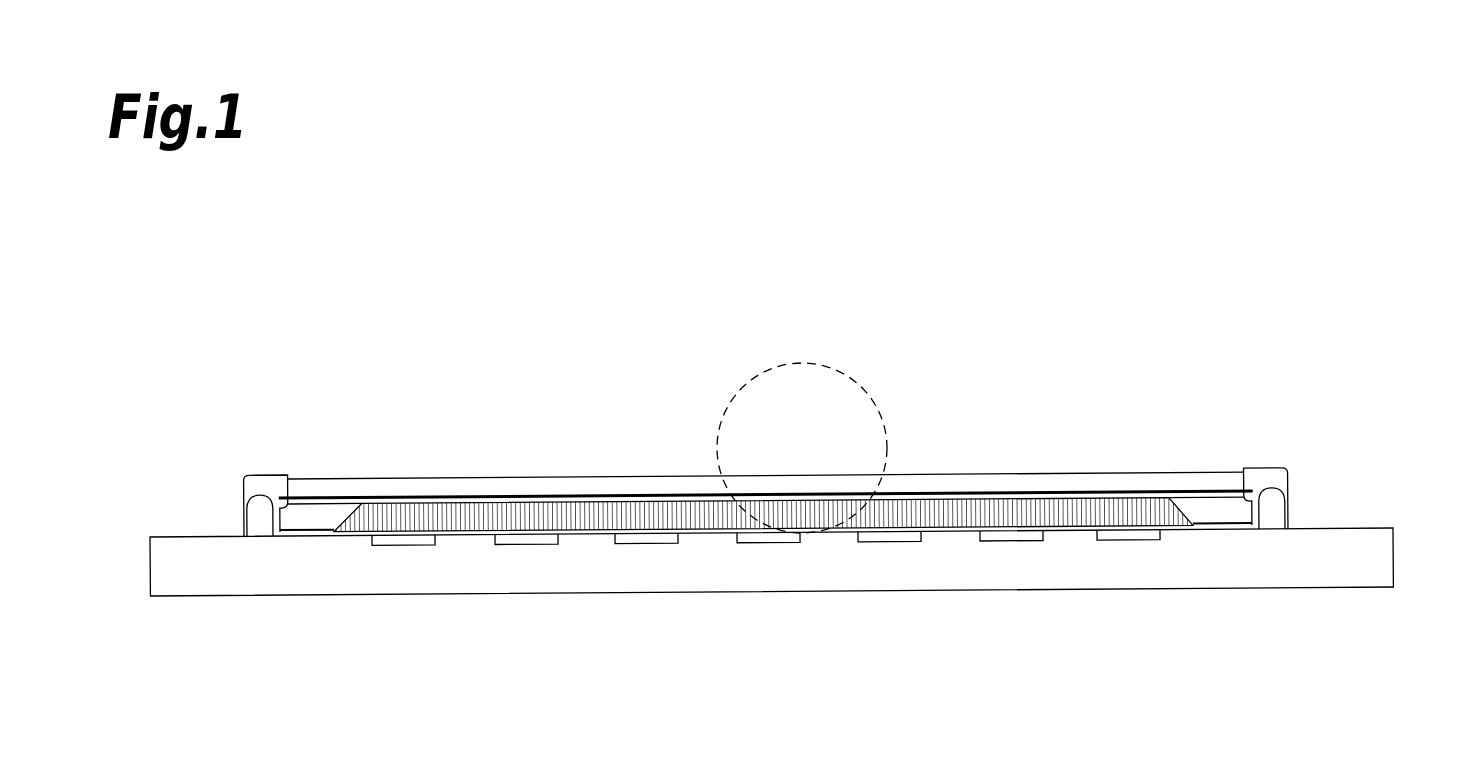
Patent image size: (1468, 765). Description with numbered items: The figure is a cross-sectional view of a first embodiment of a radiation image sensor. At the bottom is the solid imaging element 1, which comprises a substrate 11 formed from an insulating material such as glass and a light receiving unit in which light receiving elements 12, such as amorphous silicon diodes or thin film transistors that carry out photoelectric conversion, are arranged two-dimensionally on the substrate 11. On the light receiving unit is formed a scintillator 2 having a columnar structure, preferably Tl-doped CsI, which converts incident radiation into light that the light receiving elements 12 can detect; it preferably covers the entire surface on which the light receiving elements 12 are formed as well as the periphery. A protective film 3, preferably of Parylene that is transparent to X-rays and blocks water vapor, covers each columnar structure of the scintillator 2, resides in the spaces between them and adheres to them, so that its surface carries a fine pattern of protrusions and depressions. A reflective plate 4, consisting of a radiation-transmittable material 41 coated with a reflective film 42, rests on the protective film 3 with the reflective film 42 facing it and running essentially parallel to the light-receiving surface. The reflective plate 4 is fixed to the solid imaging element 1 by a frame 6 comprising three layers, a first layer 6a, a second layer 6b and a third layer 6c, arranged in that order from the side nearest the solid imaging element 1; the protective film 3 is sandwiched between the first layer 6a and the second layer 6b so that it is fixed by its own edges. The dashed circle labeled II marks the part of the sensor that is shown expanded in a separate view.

The solid imaging element 1 is at (771, 628).
The substrate 11 is at (1235, 577).
The light receiving elements 12 is at (1150, 540).
The scintillator 2 is at (1170, 512).
The protective film 3 is at (1105, 493).
The reflective plate 4 is at (766, 414).
The radiation-transmittable material 41 is at (578, 485).
The reflective film 42 is at (557, 378).
The frame 6 is at (842, 439).
The first layer 6a is at (1280, 512).
The second layer 6b is at (1282, 477).
The third layer 6c is at (1252, 470).
The detail region II is at (862, 392).